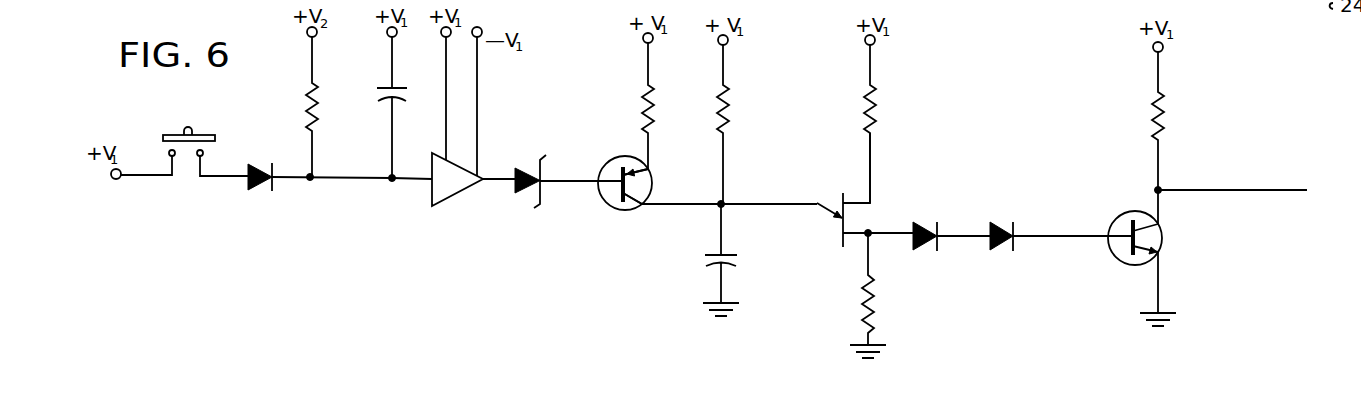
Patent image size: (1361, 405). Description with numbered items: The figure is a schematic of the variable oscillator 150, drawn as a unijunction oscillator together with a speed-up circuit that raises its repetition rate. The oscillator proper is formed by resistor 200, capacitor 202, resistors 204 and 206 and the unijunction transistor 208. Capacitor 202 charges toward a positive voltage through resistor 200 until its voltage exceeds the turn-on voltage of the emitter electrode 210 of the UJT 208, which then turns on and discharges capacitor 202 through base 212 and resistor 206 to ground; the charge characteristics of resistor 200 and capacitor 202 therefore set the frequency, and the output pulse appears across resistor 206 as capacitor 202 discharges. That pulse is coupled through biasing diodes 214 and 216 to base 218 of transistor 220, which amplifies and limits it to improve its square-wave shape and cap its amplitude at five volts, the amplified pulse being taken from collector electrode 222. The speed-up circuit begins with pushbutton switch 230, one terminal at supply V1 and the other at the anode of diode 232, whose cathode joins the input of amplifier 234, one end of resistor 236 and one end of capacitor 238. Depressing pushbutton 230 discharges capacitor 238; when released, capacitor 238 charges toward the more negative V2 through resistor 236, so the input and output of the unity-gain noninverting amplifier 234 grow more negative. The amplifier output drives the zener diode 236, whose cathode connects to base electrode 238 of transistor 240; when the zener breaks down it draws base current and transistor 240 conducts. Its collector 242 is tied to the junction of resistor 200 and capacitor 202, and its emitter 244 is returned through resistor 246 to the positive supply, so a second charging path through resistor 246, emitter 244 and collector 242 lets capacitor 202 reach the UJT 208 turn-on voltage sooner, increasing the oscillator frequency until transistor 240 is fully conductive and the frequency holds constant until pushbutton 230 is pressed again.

The variable oscillator 150 is at (606, 284).
The resistor 200 is at (732, 100).
The capacitor 202 is at (733, 265).
The resistor 204 is at (877, 102).
The resistor 206 is at (873, 305).
The unijunction transistor (UJT) 208 is at (858, 218).
The emitter electrode 210 is at (822, 202).
The base 212 is at (872, 236).
The biasing diode 214 is at (939, 248).
The biasing diode 216 is at (1034, 203).
The base 218 is at (1120, 247).
The transistor 220 is at (1163, 237).
The collector electrode 222 is at (1177, 190).
The pushbutton switch 230 is at (215, 107).
The diode 232 is at (256, 188).
The amplifier 234 is at (449, 197).
The resistor / zener diode 236 is at (316, 100).
The capacitor / base electrode 238 is at (380, 99).
The transistor 240 is at (653, 185).
The collector 242 is at (634, 200).
The emitter 244 is at (650, 175).
The resistor 246 is at (637, 100).